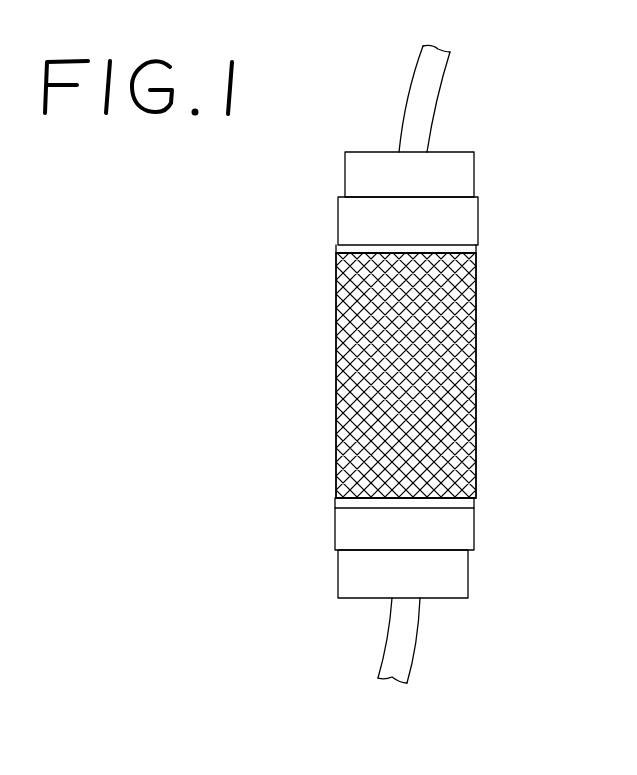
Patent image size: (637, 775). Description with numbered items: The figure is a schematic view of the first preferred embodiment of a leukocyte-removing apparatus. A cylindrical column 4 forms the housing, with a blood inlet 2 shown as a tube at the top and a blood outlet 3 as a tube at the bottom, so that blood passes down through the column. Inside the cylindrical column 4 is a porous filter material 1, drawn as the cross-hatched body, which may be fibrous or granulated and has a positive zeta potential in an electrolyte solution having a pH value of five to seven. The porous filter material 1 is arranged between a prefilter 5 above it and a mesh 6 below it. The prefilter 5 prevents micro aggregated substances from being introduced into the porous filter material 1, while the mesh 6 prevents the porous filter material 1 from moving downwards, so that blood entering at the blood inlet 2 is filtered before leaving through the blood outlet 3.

The porous filter material 1 is at (476, 352).
The blood inlet 2 is at (433, 63).
The blood outlet 3 is at (396, 670).
The cylindrical column 4 is at (473, 223).
The prefilter 5 is at (476, 250).
The mesh 6 is at (474, 500).